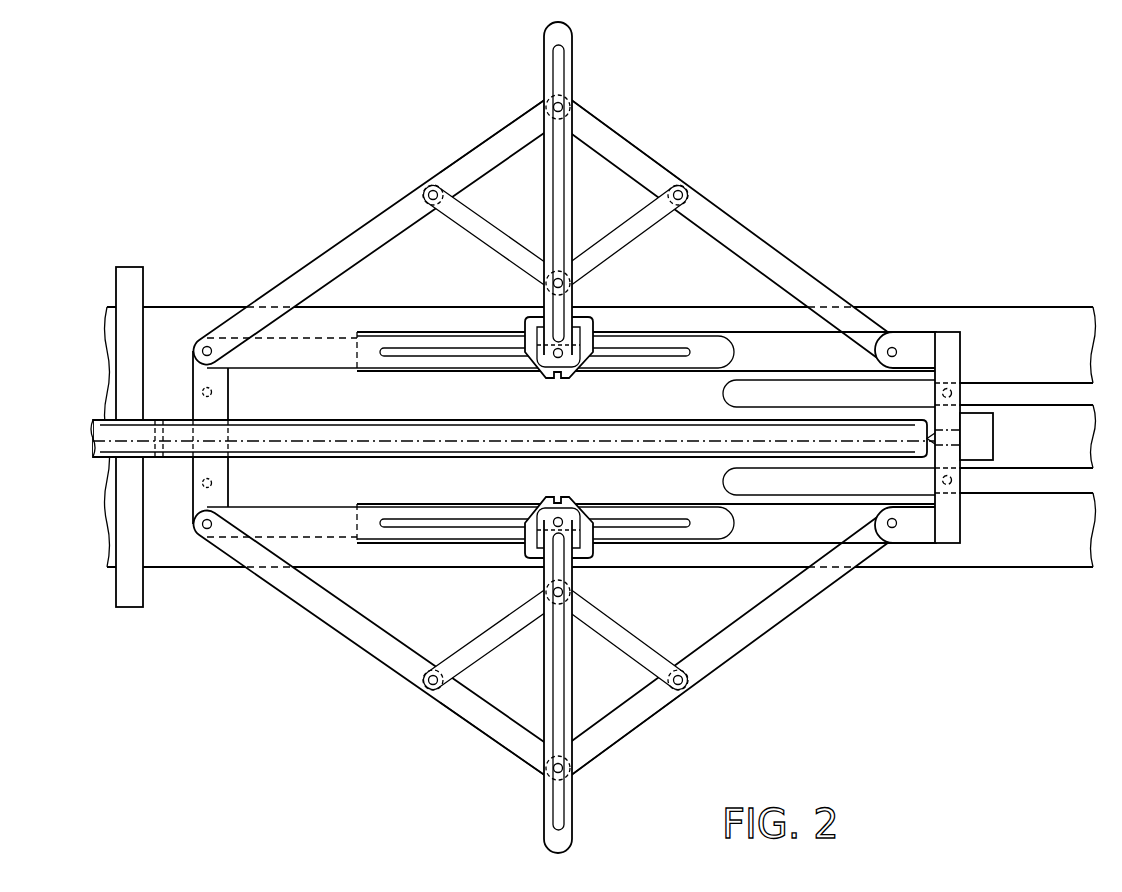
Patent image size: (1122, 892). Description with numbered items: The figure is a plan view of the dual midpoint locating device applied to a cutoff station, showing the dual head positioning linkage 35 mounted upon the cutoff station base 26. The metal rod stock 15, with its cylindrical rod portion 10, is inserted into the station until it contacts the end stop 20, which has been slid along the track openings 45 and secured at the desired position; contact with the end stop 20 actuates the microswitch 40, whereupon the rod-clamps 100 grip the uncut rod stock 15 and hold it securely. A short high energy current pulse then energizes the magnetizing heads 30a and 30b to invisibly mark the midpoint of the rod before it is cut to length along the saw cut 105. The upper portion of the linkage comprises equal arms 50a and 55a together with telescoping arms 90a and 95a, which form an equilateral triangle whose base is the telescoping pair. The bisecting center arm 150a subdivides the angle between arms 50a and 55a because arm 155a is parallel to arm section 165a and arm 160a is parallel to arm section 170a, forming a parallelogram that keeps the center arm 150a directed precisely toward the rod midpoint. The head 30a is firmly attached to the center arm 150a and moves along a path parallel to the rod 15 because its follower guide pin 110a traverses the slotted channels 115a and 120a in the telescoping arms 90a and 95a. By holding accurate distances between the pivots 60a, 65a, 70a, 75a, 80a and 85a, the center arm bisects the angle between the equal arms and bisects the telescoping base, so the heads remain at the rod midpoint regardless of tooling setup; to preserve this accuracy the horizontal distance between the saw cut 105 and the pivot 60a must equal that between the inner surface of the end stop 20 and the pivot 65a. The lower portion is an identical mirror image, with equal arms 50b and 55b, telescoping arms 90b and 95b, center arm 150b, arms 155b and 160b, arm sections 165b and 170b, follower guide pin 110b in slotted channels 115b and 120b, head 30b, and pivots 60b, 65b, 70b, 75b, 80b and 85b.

The cylindrical rod portion 10 is at (297, 423).
The metal rod stock 15 is at (175, 437).
The end stop 20 is at (948, 350).
The cutoff station base 26 is at (1001, 360).
The magnetizing head 30a is at (517, 307).
The magnetizing head 30b is at (543, 503).
The dual head positioning linkage 35 is at (288, 138).
The microswitch 40 is at (985, 443).
The track openings 45 is at (1035, 392).
The equal arm 50a is at (338, 255).
The equal arm 50b is at (357, 628).
The equal arm 55a is at (763, 255).
The equal arm 55b is at (787, 600).
The pivot 60a is at (204, 343).
The pivot 60b is at (207, 532).
The pivot 65a is at (897, 340).
The pivot 65b is at (896, 540).
The pivot 70a is at (550, 103).
The pivot 70b is at (515, 788).
The pivot 75a is at (430, 190).
The pivot 75b is at (430, 683).
The pivot 80a is at (565, 283).
The pivot 80b is at (567, 592).
The pivot 85a is at (683, 193).
The pivot 85b is at (690, 682).
The telescoping arm 90a is at (327, 350).
The telescoping arm 90b is at (278, 520).
The telescoping arm 95a is at (762, 353).
The telescoping arm 95b is at (762, 530).
The rod-clamps 100 is at (143, 265).
The saw cut 105 is at (155, 460).
The follower guide pin 110a is at (563, 357).
The follower guide pin 110b is at (575, 510).
The slotted channel 115a is at (445, 358).
The slotted channel 115b is at (418, 520).
The slotted channel 120a is at (662, 352).
The slotted channel 120b is at (658, 520).
The bisecting center arm 150a is at (573, 68).
The bisecting center arm 150b is at (573, 830).
The arm 155a is at (479, 202).
The arm 155b is at (493, 632).
The arm 160a is at (638, 205).
The arm 160b is at (617, 635).
The arm section 165a is at (595, 127).
The arm section 165b is at (627, 632).
The arm section 170a is at (502, 142).
The arm section 170b is at (490, 720).